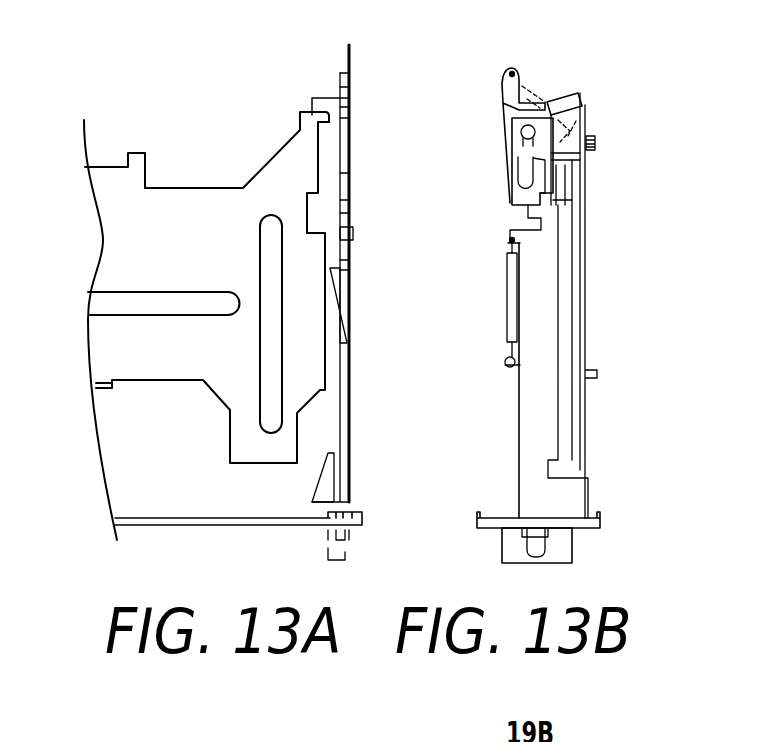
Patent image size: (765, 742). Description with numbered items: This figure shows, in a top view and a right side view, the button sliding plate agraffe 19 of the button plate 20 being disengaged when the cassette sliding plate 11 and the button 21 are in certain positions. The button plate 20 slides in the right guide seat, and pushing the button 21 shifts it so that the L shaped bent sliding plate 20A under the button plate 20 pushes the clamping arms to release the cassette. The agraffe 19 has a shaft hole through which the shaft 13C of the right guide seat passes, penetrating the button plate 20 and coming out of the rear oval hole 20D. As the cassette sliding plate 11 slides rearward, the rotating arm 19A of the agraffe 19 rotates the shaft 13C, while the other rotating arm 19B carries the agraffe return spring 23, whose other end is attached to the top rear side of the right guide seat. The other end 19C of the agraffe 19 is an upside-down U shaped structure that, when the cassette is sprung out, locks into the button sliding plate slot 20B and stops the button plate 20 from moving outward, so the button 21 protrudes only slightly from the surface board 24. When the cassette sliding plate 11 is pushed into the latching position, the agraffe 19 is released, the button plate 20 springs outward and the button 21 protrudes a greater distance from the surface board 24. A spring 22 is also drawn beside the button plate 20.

In FIG. 13A, the cassette sliding plate 11 is at (167, 366).
In FIG. 13B, the cassette sliding plate 11 is at (582, 172).
In FIG. 13B, the shaft 13C is at (521, 132).
In FIG. 13B, the button sliding plate agraffe 19 is at (502, 80).
In FIG. 13B, the rotating arm 19A is at (570, 95).
In FIG. 13B, the rotating arm 19B is at (510, 71).
In FIG. 13B, the other end of the button sliding plate agraffe 19C is at (567, 195).
In FIG. 13A, the button plate 20 is at (340, 395).
In FIG. 13B, the button plate 20 is at (527, 432).
In FIG. 13A, the L shaped bent sliding plate 20A is at (318, 497).
In FIG. 13B, the button sliding plate slot 20B is at (527, 218).
In FIG. 13B, the rear oval hole 20D is at (517, 173).
In FIG. 13A, the button 21 is at (345, 548).
In FIG. 13B, the button 21 is at (502, 550).
In FIG. 13B, the spring 22 is at (510, 290).
In FIG. 13B, the agraffe return spring 23 is at (580, 120).
In FIG. 13A, the surface board 24 is at (240, 525).
In FIG. 13B, the surface board 24 is at (597, 525).